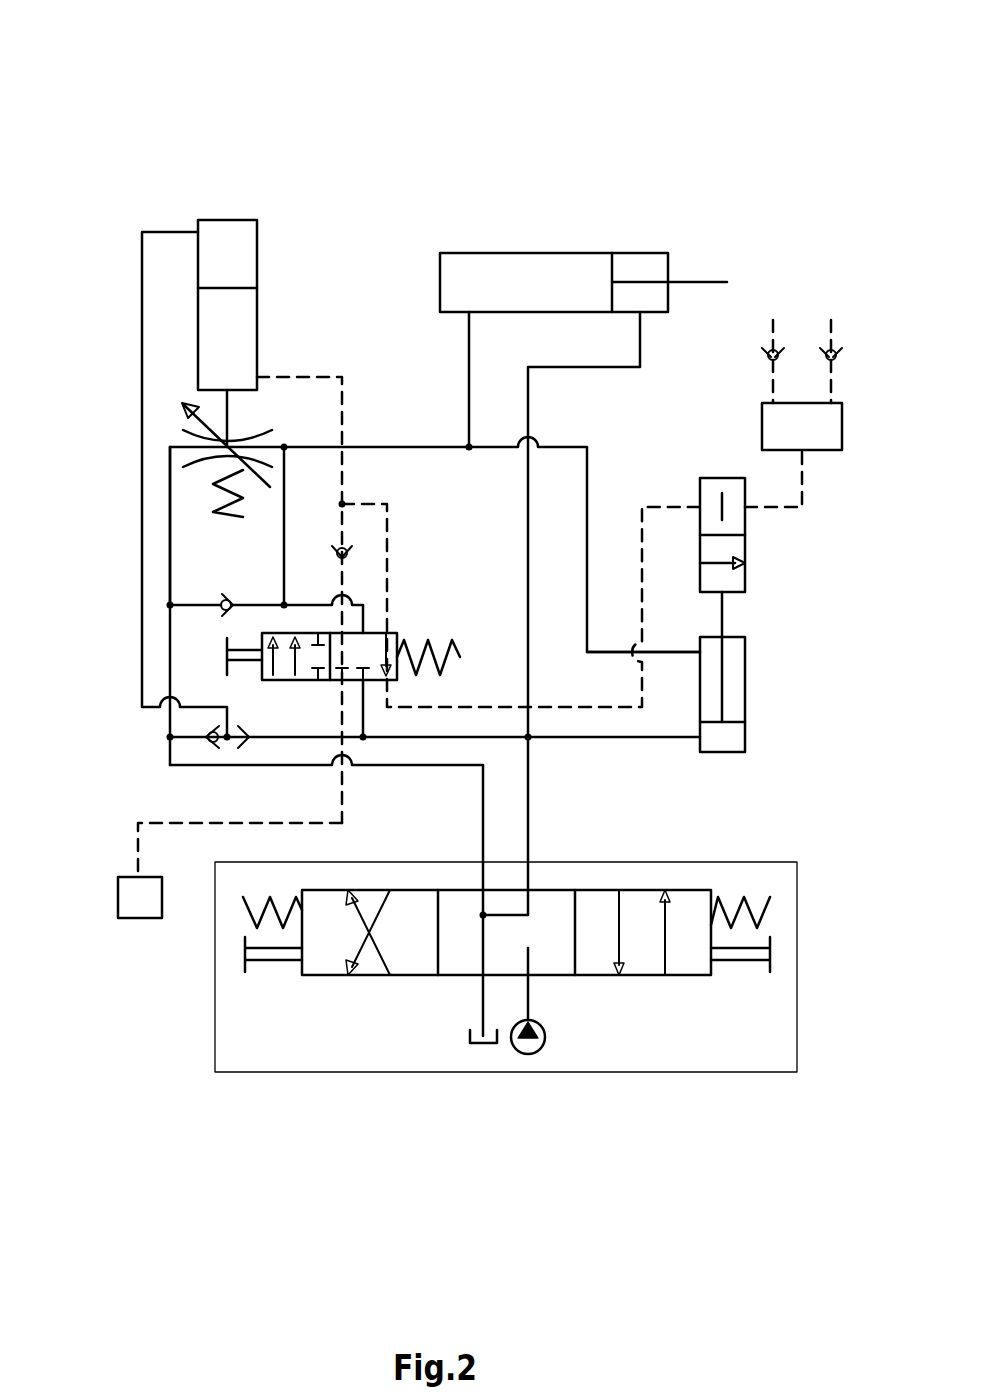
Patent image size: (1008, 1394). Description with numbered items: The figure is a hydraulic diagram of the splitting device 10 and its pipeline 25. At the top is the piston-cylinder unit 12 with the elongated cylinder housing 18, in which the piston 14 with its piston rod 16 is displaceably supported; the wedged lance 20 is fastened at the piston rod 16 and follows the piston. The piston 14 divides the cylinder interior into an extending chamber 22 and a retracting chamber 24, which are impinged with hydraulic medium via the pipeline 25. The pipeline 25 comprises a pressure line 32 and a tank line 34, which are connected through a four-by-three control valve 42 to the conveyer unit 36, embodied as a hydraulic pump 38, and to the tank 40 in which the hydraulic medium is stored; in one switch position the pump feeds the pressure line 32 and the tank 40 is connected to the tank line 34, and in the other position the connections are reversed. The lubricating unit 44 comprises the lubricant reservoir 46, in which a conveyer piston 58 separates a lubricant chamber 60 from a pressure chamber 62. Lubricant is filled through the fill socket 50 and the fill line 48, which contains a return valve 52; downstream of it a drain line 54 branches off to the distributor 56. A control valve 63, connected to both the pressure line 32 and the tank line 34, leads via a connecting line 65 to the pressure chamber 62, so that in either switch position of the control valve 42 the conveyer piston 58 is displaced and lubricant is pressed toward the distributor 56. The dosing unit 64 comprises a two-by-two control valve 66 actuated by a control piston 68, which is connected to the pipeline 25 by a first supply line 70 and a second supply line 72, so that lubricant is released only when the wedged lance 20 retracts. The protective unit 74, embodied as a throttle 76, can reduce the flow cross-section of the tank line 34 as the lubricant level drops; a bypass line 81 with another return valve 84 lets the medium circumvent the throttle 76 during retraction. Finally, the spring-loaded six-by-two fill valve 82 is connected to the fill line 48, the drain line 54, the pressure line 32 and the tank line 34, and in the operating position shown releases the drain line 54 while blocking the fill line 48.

The splitting device 10 is at (112, 94).
The pipeline 25 is at (83, 206).
The piston-cylinder unit 12 is at (595, 225).
The cylinder housing 18 is at (530, 250).
The piston 14 is at (610, 272).
The piston rod 16 is at (681, 246).
The wedged lance 20 is at (695, 280).
The extending chamber 22 is at (485, 270).
The retracting chamber 24 is at (636, 268).
The pressure line 32 is at (642, 342).
The tank line 34 is at (387, 445).
The conveyer unit 36 is at (552, 1036).
The hydraulic pump 38 is at (531, 1055).
The tank 40 is at (481, 1047).
The 4/3 control valve 42 is at (690, 890).
The lubricating unit 44 is at (321, 270).
The lubricant reservoir 46 is at (256, 268).
The fill line 48 is at (165, 825).
The fill socket 50 is at (141, 920).
The return valve 52 is at (336, 553).
The drain line 54 is at (652, 505).
The distributor 56 is at (813, 312).
The conveyer piston 58 is at (246, 267).
The lubricant chamber 60 is at (256, 305).
The pressure chamber 62 is at (256, 305).
The control valve 63 is at (221, 745).
The dosing unit 64 is at (834, 551).
The connecting line 65 is at (142, 606).
The 2/2 control valve 66 is at (747, 578).
The control piston 68 is at (747, 697).
The first supply line 70 is at (673, 740).
The second supply line 72 is at (676, 655).
The protective unit 74 is at (161, 568).
The throttle 76 is at (160, 409).
The bypass line 81 is at (280, 523).
The 6/2 fill valve 82 is at (400, 633).
The return valve 84 is at (222, 608).